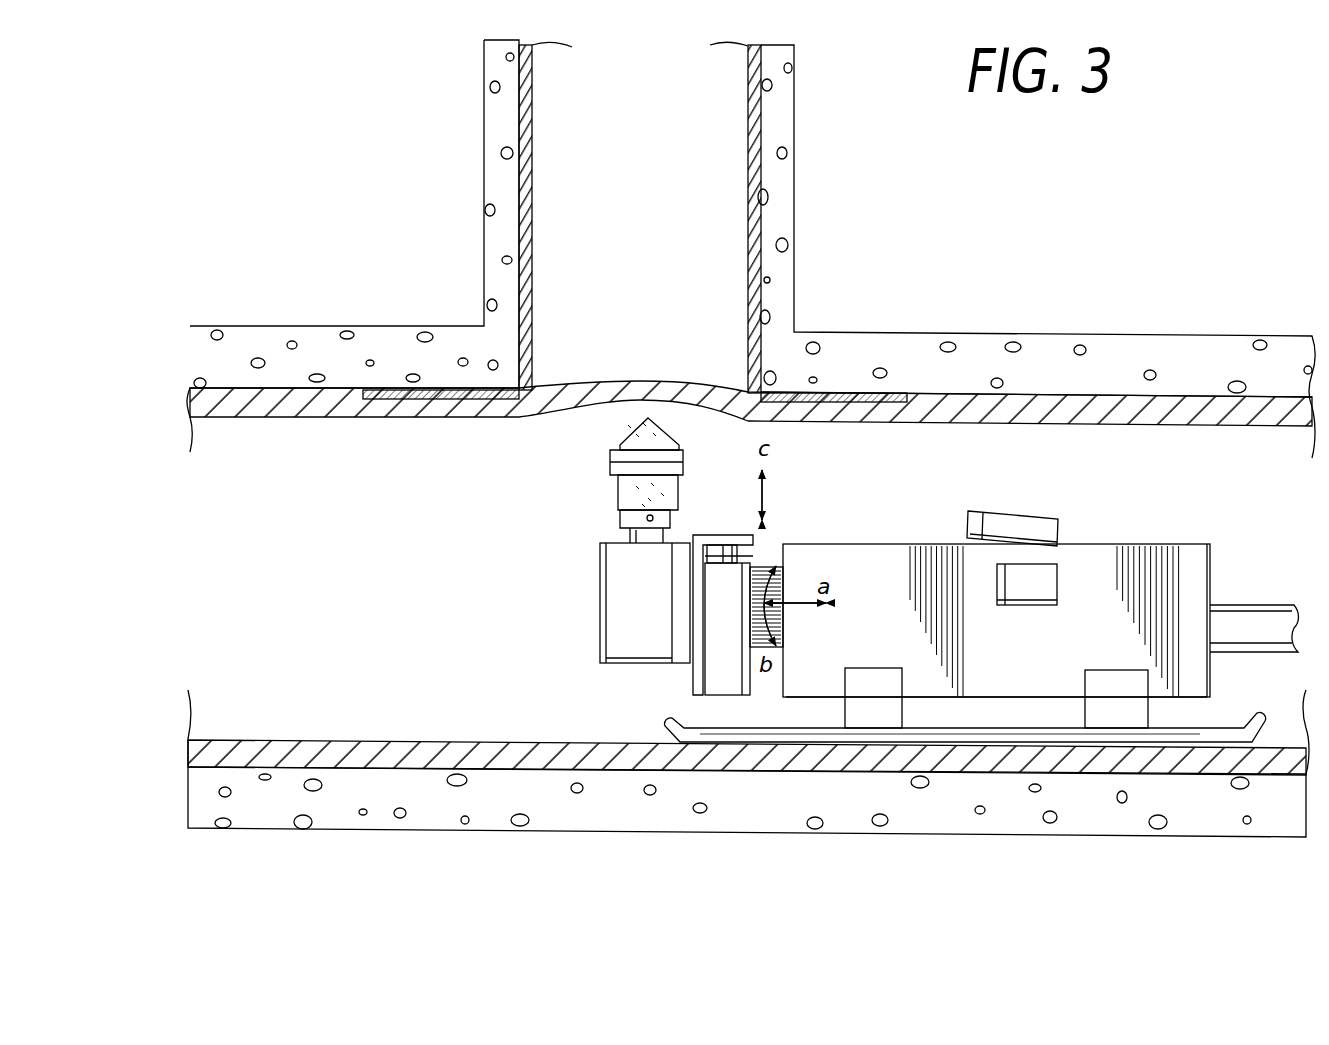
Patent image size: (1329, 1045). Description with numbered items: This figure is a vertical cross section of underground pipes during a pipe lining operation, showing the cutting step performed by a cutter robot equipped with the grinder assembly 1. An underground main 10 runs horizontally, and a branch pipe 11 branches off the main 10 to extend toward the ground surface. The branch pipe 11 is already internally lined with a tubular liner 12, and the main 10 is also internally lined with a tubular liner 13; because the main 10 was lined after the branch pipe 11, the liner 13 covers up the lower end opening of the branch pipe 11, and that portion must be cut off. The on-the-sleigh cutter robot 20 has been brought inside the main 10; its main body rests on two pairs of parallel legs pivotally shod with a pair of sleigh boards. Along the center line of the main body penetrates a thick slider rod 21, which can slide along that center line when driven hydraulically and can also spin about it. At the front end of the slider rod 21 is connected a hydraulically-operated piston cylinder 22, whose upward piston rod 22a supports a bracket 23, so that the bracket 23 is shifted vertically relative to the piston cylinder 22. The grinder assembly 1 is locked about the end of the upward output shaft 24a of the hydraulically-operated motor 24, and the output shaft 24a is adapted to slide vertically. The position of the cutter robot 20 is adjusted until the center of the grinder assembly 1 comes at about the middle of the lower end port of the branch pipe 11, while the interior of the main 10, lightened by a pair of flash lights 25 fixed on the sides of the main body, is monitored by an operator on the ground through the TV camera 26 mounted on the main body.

The grinder assembly 1 is at (622, 455).
The underground main 10 is at (836, 812).
The branch pipe 11 is at (785, 162).
The tubular liner 12 is at (525, 258).
The tubular liner 13 is at (457, 410).
The on-the-sleigh cutter robot 20 is at (1041, 595).
The slider rod 21 is at (783, 620).
The piston cylinder 22 is at (731, 598).
The piston rod 22a is at (740, 553).
The bracket 23 is at (708, 535).
The hydraulically-operated motor 24 is at (600, 605).
The output shaft 24a is at (632, 535).
The flash lights 25 is at (1022, 598).
The TV camera 26 is at (1005, 527).